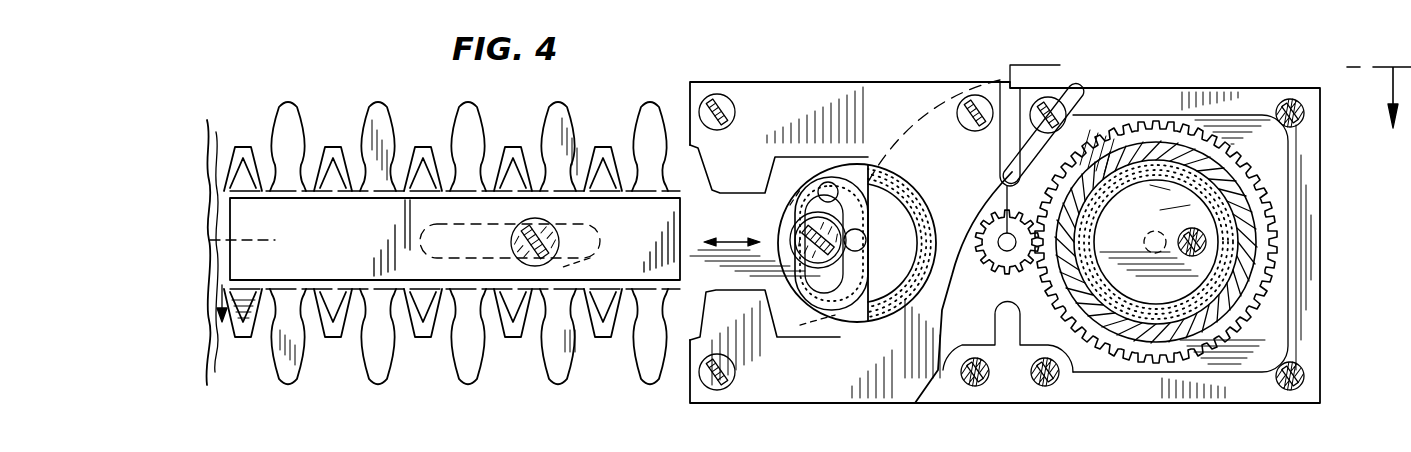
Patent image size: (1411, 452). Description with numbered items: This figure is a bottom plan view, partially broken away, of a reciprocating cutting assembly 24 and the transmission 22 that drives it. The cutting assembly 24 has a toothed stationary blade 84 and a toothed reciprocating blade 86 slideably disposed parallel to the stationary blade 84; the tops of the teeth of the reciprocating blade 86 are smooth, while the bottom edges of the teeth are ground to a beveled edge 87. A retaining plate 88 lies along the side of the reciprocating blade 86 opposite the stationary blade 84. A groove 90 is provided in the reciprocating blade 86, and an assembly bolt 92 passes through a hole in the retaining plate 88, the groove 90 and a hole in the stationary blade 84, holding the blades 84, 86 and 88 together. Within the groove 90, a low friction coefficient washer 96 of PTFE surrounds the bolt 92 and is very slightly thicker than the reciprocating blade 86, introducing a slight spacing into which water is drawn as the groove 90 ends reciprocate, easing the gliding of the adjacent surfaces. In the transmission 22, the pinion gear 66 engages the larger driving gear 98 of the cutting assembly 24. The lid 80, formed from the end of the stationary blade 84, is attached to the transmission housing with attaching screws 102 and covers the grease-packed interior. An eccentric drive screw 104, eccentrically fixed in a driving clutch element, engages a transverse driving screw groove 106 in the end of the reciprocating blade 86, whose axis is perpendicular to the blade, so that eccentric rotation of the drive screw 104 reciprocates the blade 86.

The transmission 22 is at (1333, 248).
The reciprocating cutting assembly 24 is at (426, 394).
The pinion gear 66 is at (1002, 263).
The lid 80 is at (762, 102).
The stationary blade 84 is at (645, 116).
The reciprocating blade 86 is at (603, 177).
The beveled edge 87 is at (500, 150).
The retaining plate 88 is at (600, 268).
The groove 90 is at (400, 222).
The assembly bolt 92 is at (527, 232).
The low friction coefficient washer 96 is at (596, 226).
The driving gear 98 is at (1168, 82).
The attaching screw 102 is at (730, 70).
The eccentric drive screw 104 is at (806, 238).
The transverse driving screw groove 106 is at (823, 184).